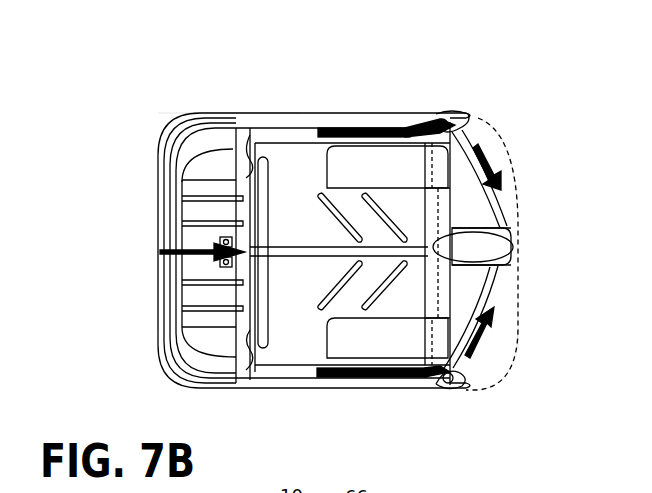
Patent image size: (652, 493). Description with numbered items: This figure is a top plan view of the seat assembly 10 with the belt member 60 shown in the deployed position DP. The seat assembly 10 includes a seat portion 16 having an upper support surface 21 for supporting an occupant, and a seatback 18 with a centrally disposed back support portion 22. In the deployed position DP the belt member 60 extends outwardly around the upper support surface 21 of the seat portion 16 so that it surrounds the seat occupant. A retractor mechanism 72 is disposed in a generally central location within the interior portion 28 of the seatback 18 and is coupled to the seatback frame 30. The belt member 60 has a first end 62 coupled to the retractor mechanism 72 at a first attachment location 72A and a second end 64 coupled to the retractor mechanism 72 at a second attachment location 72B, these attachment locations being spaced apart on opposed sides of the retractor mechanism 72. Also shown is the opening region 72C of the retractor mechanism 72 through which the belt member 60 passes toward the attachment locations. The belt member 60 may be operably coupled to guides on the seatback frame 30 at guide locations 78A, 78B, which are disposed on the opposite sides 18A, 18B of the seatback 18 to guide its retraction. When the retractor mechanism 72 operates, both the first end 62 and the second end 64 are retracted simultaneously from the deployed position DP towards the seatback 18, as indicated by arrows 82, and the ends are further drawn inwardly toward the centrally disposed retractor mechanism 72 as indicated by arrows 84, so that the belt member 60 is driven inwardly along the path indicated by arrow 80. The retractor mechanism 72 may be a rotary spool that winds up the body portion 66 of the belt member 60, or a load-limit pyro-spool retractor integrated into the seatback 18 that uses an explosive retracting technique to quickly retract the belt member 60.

The seat assembly 10 is at (305, 82).
The seat portion 16 is at (205, 108).
The seatback 18 is at (521, 354).
The first side of seatback 18A is at (460, 158).
The second side of seatback 18B is at (463, 388).
The upper support surface 21 is at (285, 180).
The back support portion 22 is at (387, 318).
The interior portion 28 is at (498, 324).
The seatback frame 30 is at (484, 150).
The belt member 60 is at (150, 350).
The first end of belt member 62 is at (498, 197).
The second end of belt member 64 is at (512, 288).
The body portion of belt member 66 is at (163, 157).
The retractor mechanism 72 is at (523, 233).
The first attachment location 72A is at (510, 233).
The second attachment location 72B is at (512, 269).
The latch opening 72C is at (523, 251).
The first guide location 78A is at (449, 120).
The second guide location 78B is at (450, 386).
The arrow indicating inward path 80 is at (200, 252).
The arrows indicating retraction toward seatback 82 is at (362, 128).
The arrows indicating inward retraction 84 is at (497, 160).
The deployed position DP is at (137, 276).